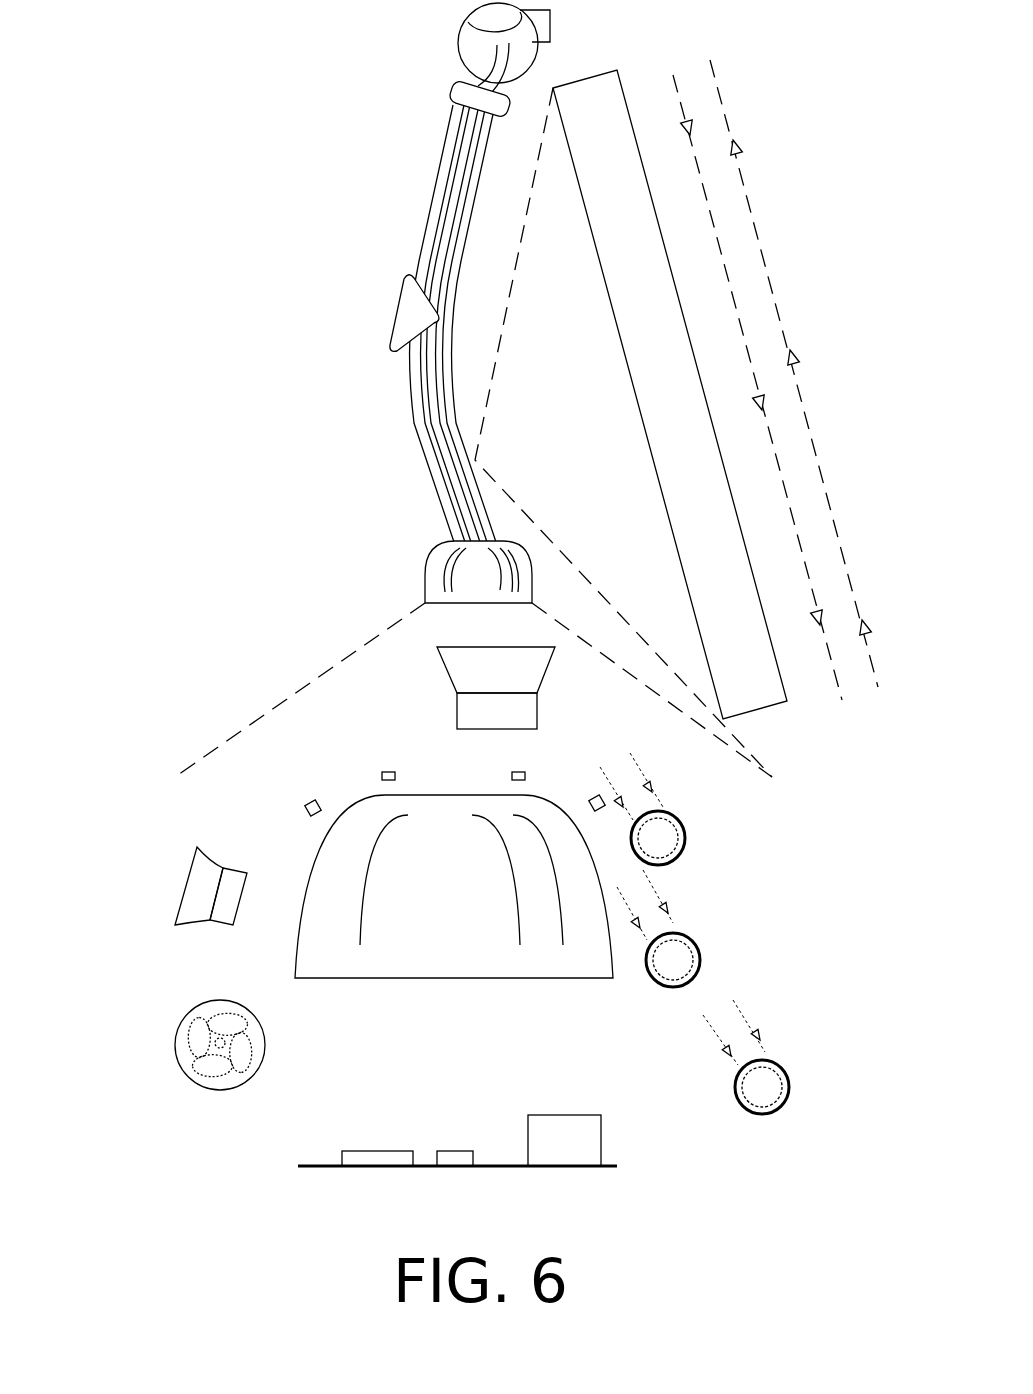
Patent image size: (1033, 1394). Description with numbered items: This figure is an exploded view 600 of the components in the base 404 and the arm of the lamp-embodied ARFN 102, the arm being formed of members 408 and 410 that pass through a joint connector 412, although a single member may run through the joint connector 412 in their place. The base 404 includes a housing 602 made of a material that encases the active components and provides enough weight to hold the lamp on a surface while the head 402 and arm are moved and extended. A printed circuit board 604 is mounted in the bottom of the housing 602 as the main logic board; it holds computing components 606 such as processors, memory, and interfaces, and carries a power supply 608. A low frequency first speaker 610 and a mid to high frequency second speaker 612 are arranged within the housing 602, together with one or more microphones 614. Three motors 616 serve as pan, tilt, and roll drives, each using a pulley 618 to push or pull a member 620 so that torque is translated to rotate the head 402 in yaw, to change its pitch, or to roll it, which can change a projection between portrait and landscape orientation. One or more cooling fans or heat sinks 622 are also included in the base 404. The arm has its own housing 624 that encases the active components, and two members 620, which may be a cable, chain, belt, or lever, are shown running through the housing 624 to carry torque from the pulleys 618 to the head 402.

The lamp-embodied ARFN 102 is at (290, 48).
The head 402 is at (424, 65).
The base 404 is at (366, 558).
The member 408 is at (390, 394).
The member 410 is at (392, 204).
The joint connector 412 is at (379, 308).
The exploded view 600 is at (786, 47).
The housing 602 is at (295, 978).
The printed circuit board 604 is at (377, 1168).
The computing components 606 is at (437, 1151).
The power supply 608 is at (601, 1140).
The first speaker 610 is at (543, 675).
The second speaker 612 is at (175, 885).
The microphone 614 is at (382, 773).
The motor 616 is at (683, 825).
The pulley 618 is at (678, 846).
The member 620 is at (747, 200).
The cooling fan or heat sink 622 is at (193, 1008).
The housing 624 is at (638, 397).